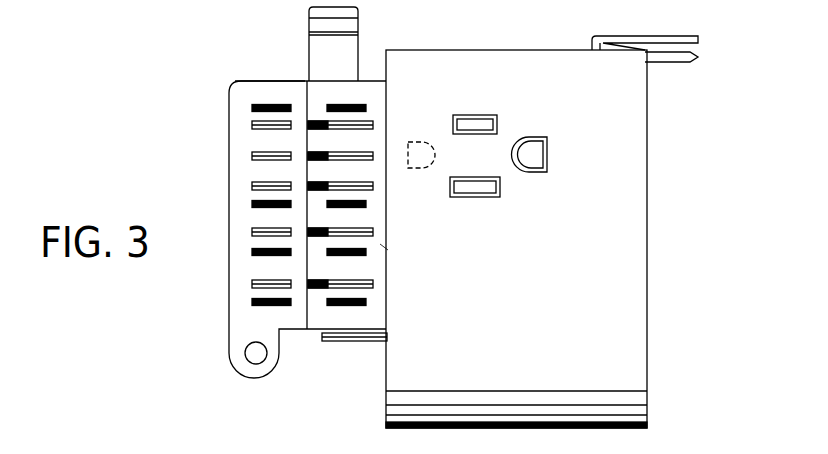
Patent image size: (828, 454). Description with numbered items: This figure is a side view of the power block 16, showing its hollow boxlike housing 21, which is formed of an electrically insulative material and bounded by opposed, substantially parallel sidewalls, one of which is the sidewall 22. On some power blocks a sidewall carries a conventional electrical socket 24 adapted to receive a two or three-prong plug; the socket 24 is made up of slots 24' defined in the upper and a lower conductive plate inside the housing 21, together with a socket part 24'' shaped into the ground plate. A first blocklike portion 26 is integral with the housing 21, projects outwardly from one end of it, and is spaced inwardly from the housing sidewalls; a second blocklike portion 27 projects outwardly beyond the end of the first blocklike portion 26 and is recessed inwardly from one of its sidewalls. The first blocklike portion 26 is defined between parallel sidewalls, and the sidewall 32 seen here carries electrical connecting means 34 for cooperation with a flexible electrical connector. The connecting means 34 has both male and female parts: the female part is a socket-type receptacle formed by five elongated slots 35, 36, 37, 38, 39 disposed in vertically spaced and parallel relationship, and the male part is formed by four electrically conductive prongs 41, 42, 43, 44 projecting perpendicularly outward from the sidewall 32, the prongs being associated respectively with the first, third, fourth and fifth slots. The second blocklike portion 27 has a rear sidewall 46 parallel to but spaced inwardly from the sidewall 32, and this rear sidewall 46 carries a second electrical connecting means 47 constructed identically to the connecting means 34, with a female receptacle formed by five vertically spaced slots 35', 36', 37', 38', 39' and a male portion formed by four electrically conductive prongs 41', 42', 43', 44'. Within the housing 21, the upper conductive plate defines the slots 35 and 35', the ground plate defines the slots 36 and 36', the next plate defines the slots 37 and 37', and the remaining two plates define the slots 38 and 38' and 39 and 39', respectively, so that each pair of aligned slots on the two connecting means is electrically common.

The power block 16 is at (654, 158).
The housing 21 is at (626, 270).
The sidewall 22 is at (516, 391).
The electrical socket 24 is at (522, 62).
The slot 24' is at (474, 152).
The socket part 24'' is at (505, 154).
The first blocklike portion 26 is at (365, 320).
The second blocklike portion 27 is at (247, 319).
The sidewall 32 is at (353, 56).
The electrical connecting means 34 is at (382, 245).
The elongated slot 35 is at (367, 111).
The elongated slot 36 is at (367, 139).
The elongated slot 37 is at (367, 185).
The elongated slot 38 is at (368, 237).
The elongated slot 39 is at (368, 296).
The electrically conductive prong 41 is at (376, 87).
The electrically conductive prong 42 is at (378, 215).
The electrically conductive prong 43 is at (378, 269).
The electrically conductive prong 44 is at (378, 320).
The slot 35' is at (220, 113).
The slot 36' is at (220, 142).
The slot 37' is at (220, 172).
The slot 38' is at (232, 247).
The slot 39' is at (232, 299).
The electrically conductive prong 41' is at (220, 88).
The electrically conductive prong 42' is at (235, 214).
The electrically conductive prong 43' is at (232, 272).
The electrically conductive prong 44' is at (232, 324).
The rear sidewall 46 is at (281, 93).
The electrical connecting means 47 is at (240, 195).